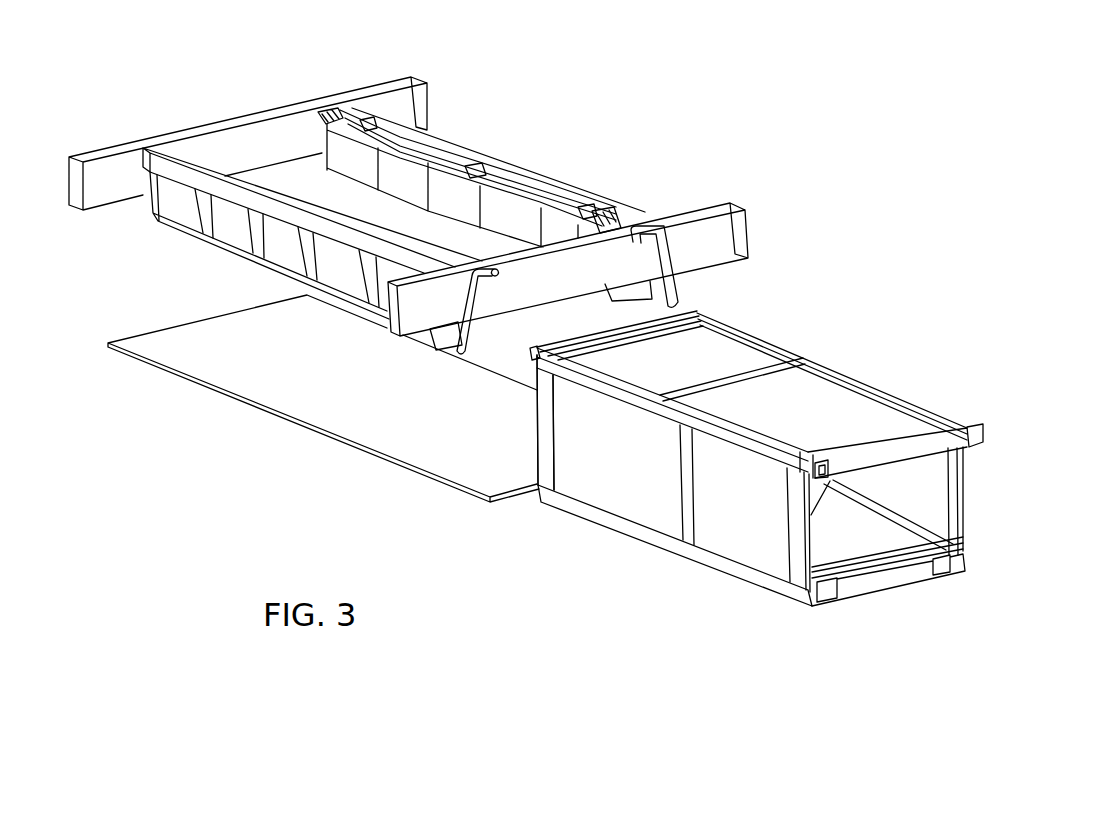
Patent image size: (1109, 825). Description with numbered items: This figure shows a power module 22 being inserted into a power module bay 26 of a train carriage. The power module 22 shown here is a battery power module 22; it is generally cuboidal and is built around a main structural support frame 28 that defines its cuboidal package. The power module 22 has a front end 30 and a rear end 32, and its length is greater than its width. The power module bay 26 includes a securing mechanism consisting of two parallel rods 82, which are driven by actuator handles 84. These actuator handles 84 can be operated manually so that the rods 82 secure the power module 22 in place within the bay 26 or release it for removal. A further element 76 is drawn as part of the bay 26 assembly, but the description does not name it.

The power module 22 is at (730, 499).
The power module bay 26 is at (553, 148).
The main structural support frame 28 is at (753, 580).
The front end 30 is at (900, 578).
The rear end 32 is at (547, 455).
The side panel assembly 76 is at (221, 246).
The parallel rods 82 is at (437, 158).
The actuator handles 84 is at (677, 281).